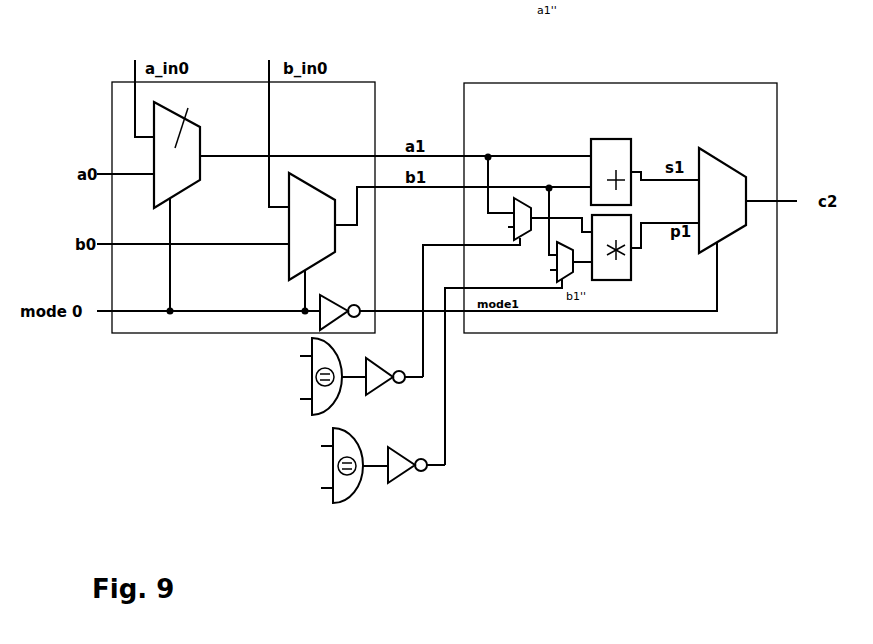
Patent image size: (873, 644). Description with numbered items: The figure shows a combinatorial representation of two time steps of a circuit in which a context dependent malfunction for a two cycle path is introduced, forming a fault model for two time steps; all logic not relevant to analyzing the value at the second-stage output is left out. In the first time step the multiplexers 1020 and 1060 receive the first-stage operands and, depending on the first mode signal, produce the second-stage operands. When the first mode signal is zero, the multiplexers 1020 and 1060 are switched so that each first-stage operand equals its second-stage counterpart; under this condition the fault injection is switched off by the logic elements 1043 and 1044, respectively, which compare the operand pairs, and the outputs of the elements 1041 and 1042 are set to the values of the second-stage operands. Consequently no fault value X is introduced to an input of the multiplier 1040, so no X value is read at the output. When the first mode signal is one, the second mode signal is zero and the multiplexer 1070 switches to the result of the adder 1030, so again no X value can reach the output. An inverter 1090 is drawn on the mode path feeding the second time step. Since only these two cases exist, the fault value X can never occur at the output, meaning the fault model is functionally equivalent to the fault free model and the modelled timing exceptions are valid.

The multiplexer 1020 is at (198, 155).
The multiplexer 1060 is at (325, 200).
The inverter 1090 is at (318, 312).
The adder 1030 is at (612, 150).
The multiplier 1040 is at (614, 263).
The fault injection element 1041 is at (522, 243).
The fault injection element 1042 is at (562, 288).
The logic element 1043 is at (312, 377).
The logic element 1044 is at (333, 466).
The multiplexer 1070 is at (723, 170).